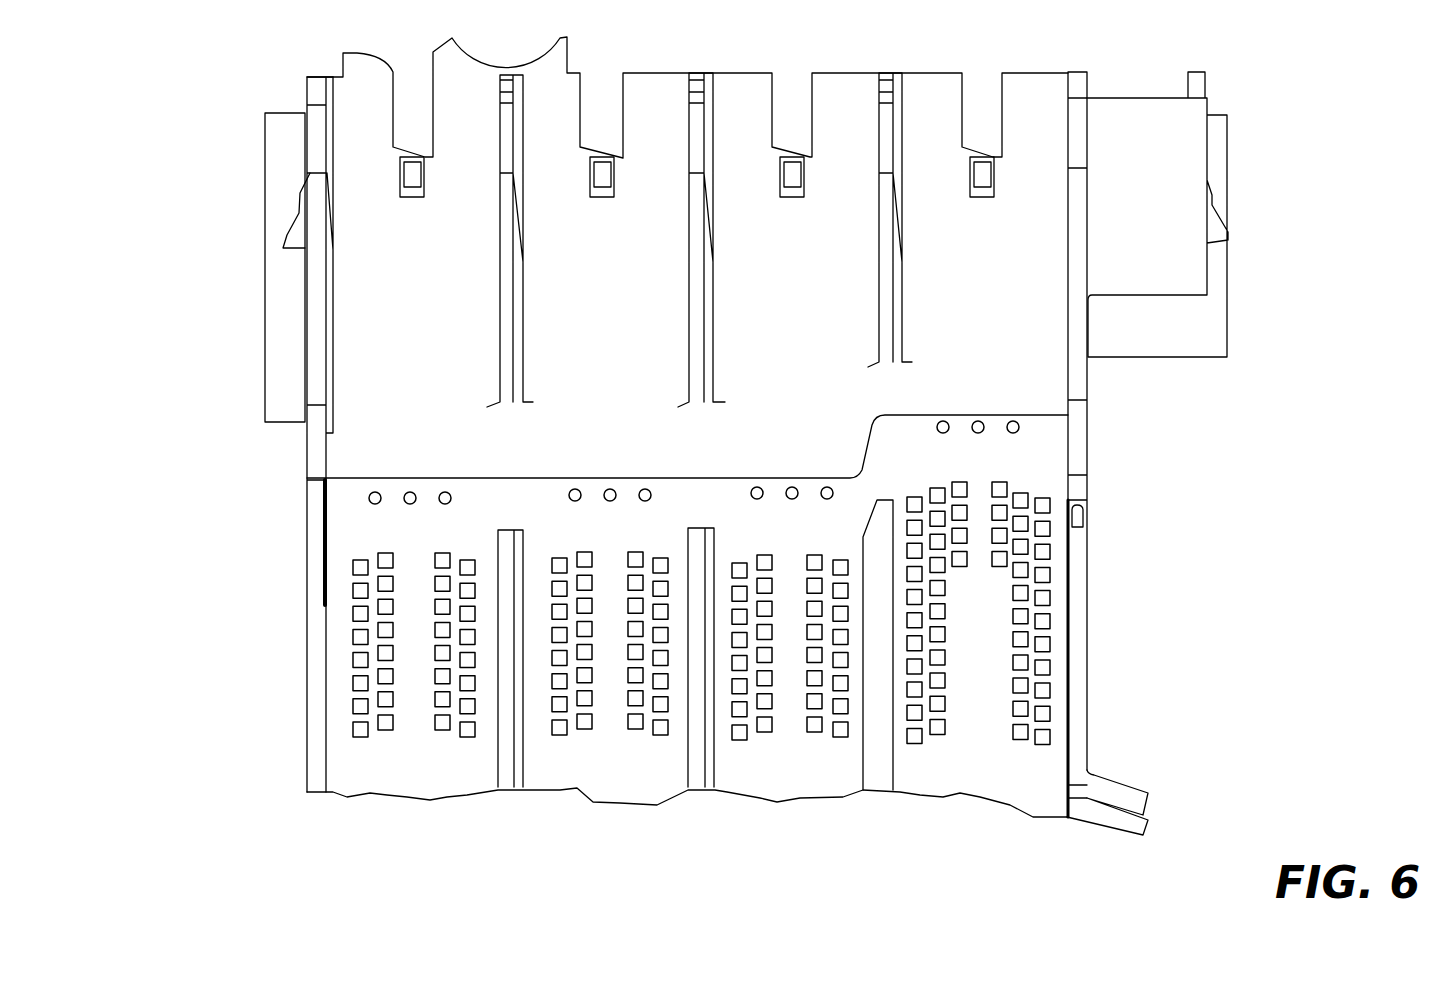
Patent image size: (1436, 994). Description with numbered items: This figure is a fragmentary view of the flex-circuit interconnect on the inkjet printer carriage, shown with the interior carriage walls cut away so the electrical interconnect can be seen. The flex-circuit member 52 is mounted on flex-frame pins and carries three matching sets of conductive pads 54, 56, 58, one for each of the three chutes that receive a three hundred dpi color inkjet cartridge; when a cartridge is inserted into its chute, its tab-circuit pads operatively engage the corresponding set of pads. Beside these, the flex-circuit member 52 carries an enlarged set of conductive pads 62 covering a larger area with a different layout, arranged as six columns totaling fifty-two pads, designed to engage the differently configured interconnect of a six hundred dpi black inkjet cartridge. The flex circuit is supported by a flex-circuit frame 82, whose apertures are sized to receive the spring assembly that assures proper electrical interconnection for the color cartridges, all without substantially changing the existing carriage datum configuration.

The flex-circuit member 52 is at (340, 526).
The set of conductive pads 54 is at (410, 768).
The set of conductive pads 56 is at (610, 775).
The set of conductive pads 58 is at (783, 774).
The enlarged set of conductive pads 62 is at (1049, 466).
The flex-circuit frame 82 is at (1112, 392).